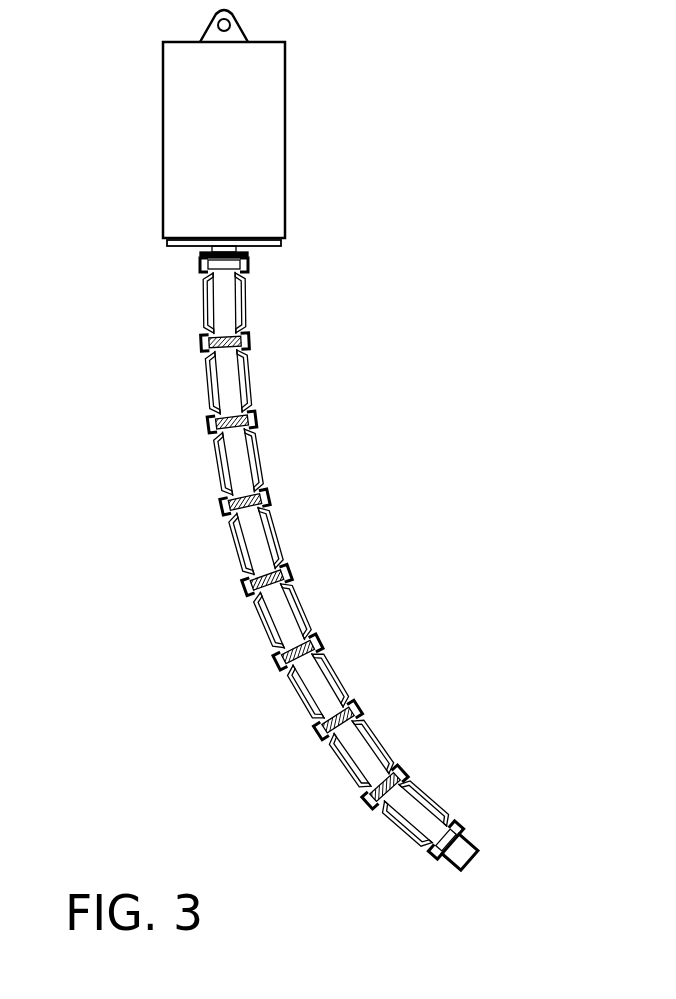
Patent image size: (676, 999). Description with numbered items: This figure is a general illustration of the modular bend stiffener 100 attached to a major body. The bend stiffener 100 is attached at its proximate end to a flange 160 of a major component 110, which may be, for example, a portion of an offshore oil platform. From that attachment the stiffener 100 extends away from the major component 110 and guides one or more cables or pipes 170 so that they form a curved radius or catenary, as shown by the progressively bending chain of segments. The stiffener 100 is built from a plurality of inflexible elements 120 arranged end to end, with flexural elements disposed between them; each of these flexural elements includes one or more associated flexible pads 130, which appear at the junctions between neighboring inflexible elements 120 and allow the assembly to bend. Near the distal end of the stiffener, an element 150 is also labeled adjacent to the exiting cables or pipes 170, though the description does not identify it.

The bend stiffener 100 is at (446, 420).
The major component 110 is at (245, 151).
The inflexible elements 120 is at (280, 576).
The flexible pads 130 is at (250, 341).
The end joint 150 is at (462, 836).
The flange 160 is at (250, 256).
The cables or pipes 170 is at (468, 857).